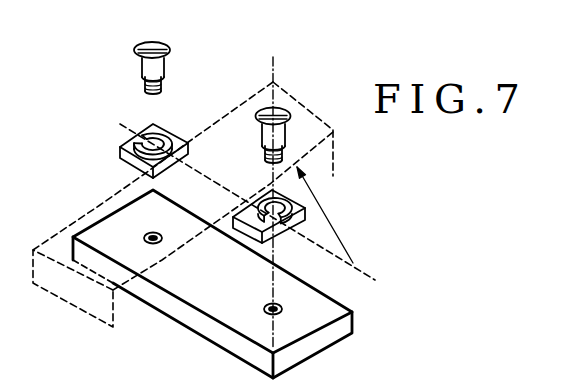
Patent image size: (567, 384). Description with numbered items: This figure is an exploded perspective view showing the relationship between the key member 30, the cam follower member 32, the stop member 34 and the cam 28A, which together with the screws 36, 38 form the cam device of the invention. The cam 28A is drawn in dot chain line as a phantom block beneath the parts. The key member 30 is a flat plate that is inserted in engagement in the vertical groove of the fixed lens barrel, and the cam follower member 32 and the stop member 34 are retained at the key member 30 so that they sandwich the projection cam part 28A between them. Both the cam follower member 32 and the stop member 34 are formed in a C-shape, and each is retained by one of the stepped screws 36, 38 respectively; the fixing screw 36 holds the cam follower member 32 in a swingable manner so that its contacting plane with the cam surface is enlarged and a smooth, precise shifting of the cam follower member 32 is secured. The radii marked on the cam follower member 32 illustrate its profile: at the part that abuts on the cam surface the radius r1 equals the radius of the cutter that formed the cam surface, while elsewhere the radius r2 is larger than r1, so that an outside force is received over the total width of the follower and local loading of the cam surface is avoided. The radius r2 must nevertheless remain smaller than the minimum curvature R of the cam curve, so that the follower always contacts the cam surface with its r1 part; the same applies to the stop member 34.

The cam 28A is at (72, 295).
The key member 30 is at (197, 322).
The cam follower member 32 is at (297, 203).
The stop member 34 is at (176, 134).
The screw 36 is at (279, 105).
The screw 38 is at (153, 38).
The minimum curvature R is at (352, 260).
The radius of the cam follower at the abutting part r1 is at (262, 200).
The radius of the cam follower at the other part r2 is at (272, 228).